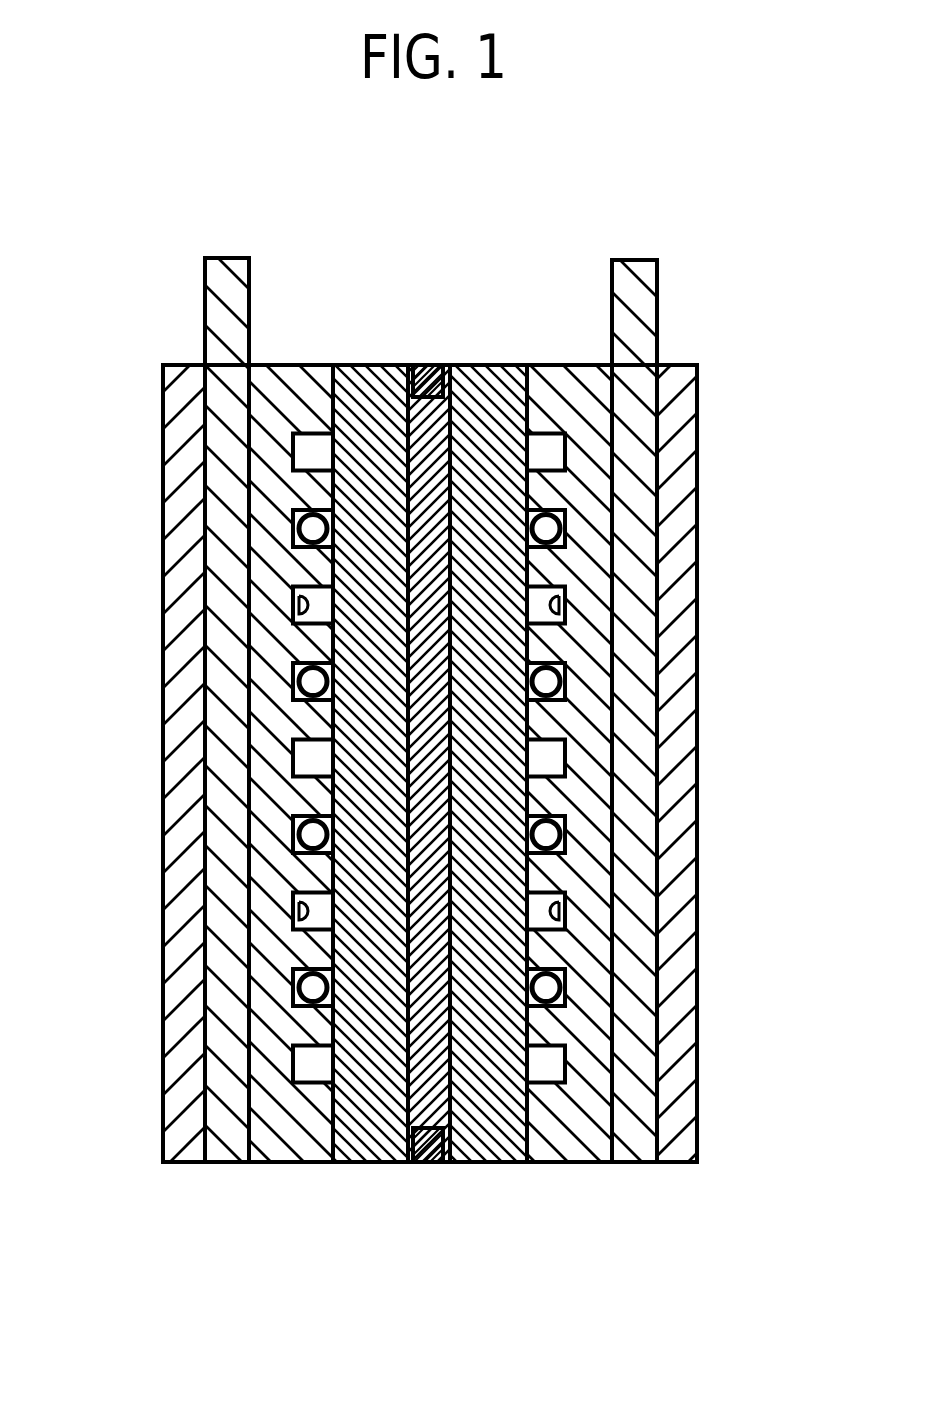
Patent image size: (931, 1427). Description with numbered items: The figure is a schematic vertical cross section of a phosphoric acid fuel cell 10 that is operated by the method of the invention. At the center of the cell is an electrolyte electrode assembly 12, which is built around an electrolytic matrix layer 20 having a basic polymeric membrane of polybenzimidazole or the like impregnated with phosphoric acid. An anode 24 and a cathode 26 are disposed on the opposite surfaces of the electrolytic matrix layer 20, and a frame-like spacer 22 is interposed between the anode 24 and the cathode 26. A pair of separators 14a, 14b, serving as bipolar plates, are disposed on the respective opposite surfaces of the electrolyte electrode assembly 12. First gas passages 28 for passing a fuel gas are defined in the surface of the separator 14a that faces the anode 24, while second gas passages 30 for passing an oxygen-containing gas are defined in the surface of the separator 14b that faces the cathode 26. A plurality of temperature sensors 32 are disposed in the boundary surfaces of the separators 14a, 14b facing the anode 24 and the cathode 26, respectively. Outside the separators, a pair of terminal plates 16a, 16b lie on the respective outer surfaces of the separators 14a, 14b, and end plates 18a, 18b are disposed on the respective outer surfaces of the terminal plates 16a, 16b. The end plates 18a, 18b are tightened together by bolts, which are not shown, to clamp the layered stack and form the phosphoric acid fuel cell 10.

The phosphoric acid fuel cell 10 is at (637, 114).
The electrolyte electrode assembly 12 is at (425, 819).
The separator 14a is at (296, 366).
The separator 14b is at (560, 388).
The terminal plate 16a is at (230, 277).
The terminal plate 16b is at (637, 273).
The end plate 18a is at (173, 441).
The end plate 18b is at (678, 458).
The electrolytic matrix layer 20 is at (427, 1165).
The frame-like spacer 22 is at (434, 366).
The anode 24 is at (363, 1164).
The cathode 26 is at (487, 1140).
The first gas passages 28 is at (297, 612).
The second gas passages 30 is at (563, 618).
The temperature sensors 32 is at (547, 680).